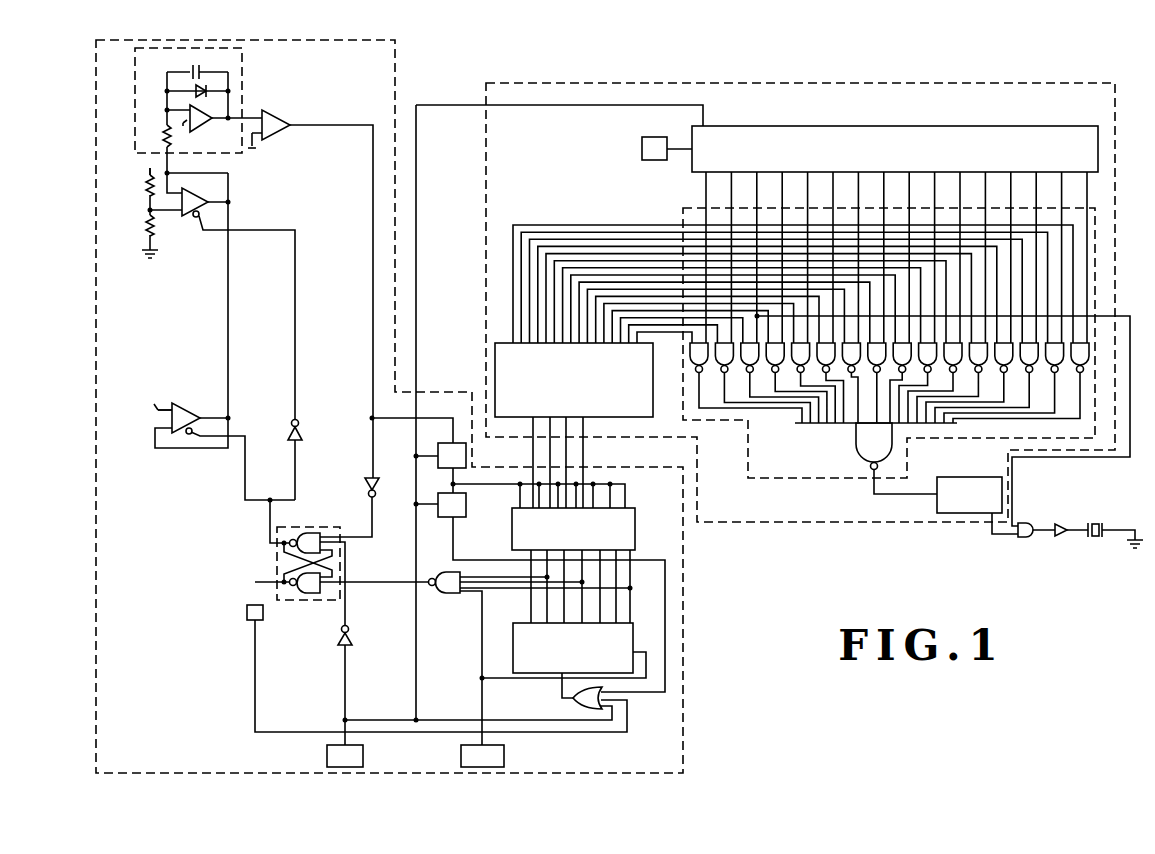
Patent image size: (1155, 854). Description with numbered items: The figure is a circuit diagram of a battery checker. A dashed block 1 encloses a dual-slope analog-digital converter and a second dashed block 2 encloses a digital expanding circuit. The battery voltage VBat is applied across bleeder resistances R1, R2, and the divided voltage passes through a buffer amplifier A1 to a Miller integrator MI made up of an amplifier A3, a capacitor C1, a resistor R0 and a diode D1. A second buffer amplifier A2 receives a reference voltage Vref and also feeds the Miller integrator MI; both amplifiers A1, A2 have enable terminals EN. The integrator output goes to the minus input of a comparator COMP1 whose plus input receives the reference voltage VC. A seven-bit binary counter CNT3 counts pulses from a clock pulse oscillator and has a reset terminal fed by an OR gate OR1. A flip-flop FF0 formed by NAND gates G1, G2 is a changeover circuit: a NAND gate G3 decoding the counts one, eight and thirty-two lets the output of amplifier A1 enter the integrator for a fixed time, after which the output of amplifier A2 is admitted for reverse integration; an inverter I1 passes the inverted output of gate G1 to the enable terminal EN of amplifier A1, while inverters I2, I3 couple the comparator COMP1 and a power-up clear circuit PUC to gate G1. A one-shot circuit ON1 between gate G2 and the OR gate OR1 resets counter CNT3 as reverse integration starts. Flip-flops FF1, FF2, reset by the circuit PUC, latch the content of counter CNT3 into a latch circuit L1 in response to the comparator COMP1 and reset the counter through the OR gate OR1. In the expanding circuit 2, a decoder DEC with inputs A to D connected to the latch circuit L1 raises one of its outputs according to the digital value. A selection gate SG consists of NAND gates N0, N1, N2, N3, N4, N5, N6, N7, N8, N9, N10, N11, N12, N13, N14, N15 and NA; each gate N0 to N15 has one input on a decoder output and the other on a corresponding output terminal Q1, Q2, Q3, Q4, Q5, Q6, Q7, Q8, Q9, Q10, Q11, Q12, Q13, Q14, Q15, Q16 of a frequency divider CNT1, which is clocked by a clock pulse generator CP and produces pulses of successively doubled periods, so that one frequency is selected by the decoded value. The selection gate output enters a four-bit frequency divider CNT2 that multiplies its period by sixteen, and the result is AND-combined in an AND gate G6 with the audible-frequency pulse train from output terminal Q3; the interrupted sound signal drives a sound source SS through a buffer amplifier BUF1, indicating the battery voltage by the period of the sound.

The analog-digital converter 1 is at (395, 55).
The digital expanding circuit 2 is at (1115, 118).
The Miller integrator MI is at (242, 78).
The capacitor C1 is at (200, 68).
The diode D1 is at (206, 84).
The amplifier A3 is at (203, 120).
The resistor R0 is at (157, 136).
The reference voltage VC is at (217, 146).
The comparator COMP1 is at (277, 113).
The battery voltage VBat is at (148, 164).
The bleeder resistance R1 is at (139, 185).
The bleeder resistance R2 is at (139, 225).
The buffer amplifier A1 is at (200, 196).
The enable terminal EN is at (187, 450).
The reference voltage Vref is at (155, 398).
The buffer amplifier A2 is at (186, 418).
The inverter I1 is at (302, 432).
The inverter I2 is at (365, 486).
The inverter I3 is at (352, 639).
The flip-flop FF0 is at (320, 527).
The NAND gate G1 is at (308, 557).
The NAND gate G2 is at (305, 583).
The one-shot circuit ON1 is at (247, 612).
The power-up clear circuit PUC is at (345, 756).
The flip-flop FF1 is at (452, 455).
The flip-flop FF2 is at (452, 505).
The NAND gate G3 is at (445, 582).
The latch circuit L1 is at (573, 529).
The 7-bit binary counter CNT3 is at (573, 648).
The OR gate OR1 is at (574, 700).
The decoder DEC is at (574, 380).
The clock pulse generator CP is at (654, 148).
The frequency divider CNT1 is at (895, 149).
The output terminal Q1 is at (706, 249).
The output terminal Q2 is at (731, 249).
The output terminal Q3 is at (757, 249).
The output terminal Q4 is at (782, 249).
The output terminal Q5 is at (808, 249).
The output terminal Q6 is at (833, 249).
The output terminal Q7 is at (858, 249).
The output terminal Q8 is at (884, 249).
The output terminal Q9 is at (909, 249).
The output terminal Q10 is at (935, 249).
The output terminal Q11 is at (960, 249).
The output terminal Q12 is at (985, 249).
The output terminal Q13 is at (1011, 249).
The output terminal Q14 is at (1036, 249).
The output terminal Q15 is at (1062, 249).
The output terminal Q16 is at (1087, 249).
The selection gate SG is at (1095, 235).
The NAND gate N0 is at (699, 358).
The NAND gate N1 is at (724, 358).
The NAND gate N2 is at (750, 358).
The NAND gate N3 is at (775, 358).
The NAND gate N4 is at (801, 358).
The NAND gate N5 is at (826, 358).
The NAND gate N6 is at (851, 358).
The NAND gate N7 is at (877, 358).
The NAND gate N8 is at (902, 358).
The NAND gate N9 is at (928, 358).
The NAND gate N10 is at (957, 358).
The NAND gate N11 is at (982, 358).
The NAND gate N12 is at (1008, 358).
The NAND gate N13 is at (1033, 358).
The NAND gate N14 is at (1058, 358).
The NAND gate N15 is at (1089, 353).
The NAND gate NA is at (874, 446).
The 4-bit frequency divider CNT2 is at (969, 495).
The AND gate G6 is at (1026, 537).
The buffer amplifier BUF1 is at (1062, 524).
The sound source SS is at (1095, 523).